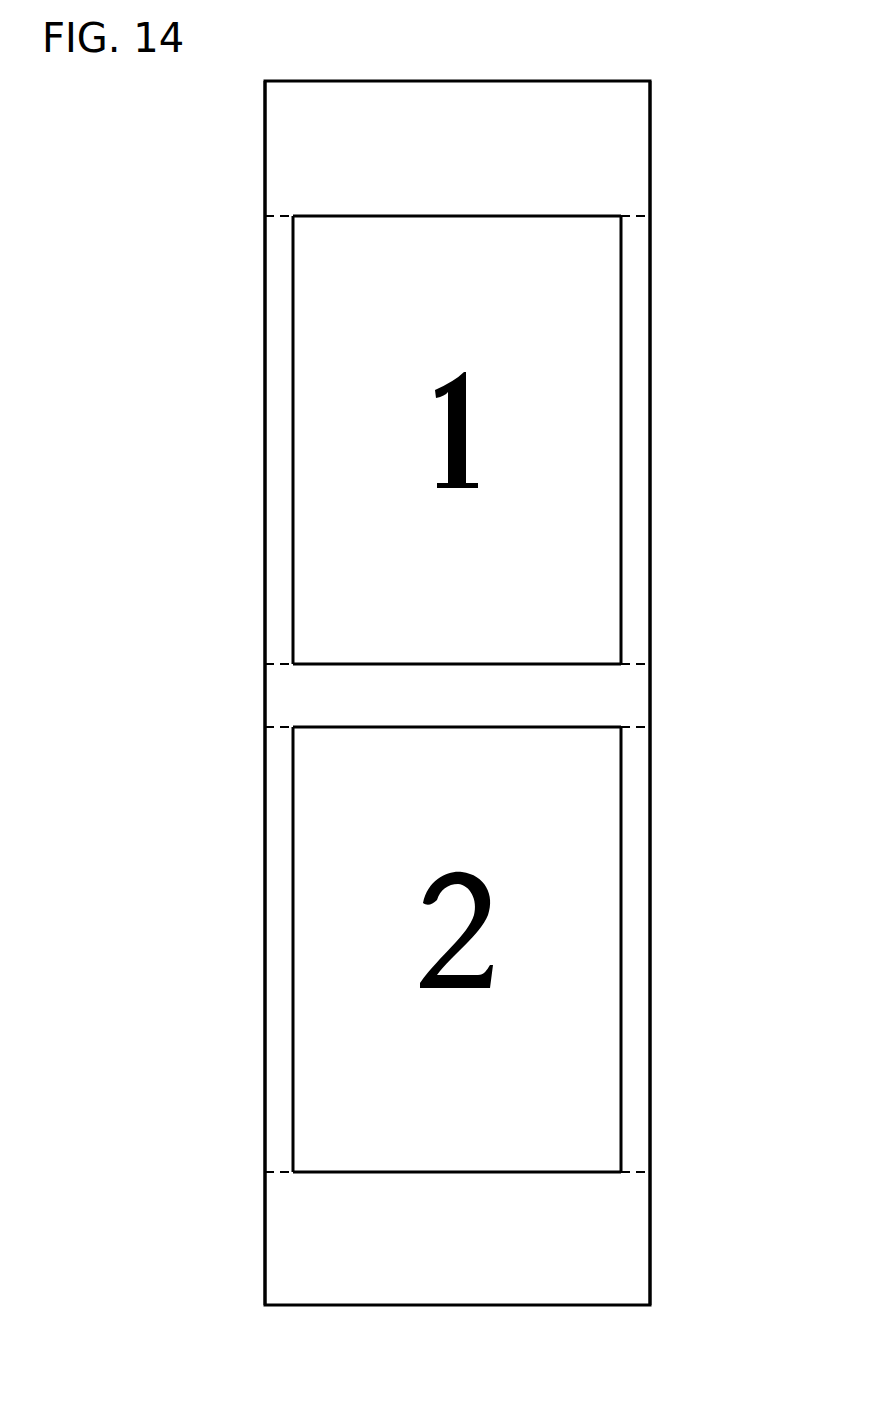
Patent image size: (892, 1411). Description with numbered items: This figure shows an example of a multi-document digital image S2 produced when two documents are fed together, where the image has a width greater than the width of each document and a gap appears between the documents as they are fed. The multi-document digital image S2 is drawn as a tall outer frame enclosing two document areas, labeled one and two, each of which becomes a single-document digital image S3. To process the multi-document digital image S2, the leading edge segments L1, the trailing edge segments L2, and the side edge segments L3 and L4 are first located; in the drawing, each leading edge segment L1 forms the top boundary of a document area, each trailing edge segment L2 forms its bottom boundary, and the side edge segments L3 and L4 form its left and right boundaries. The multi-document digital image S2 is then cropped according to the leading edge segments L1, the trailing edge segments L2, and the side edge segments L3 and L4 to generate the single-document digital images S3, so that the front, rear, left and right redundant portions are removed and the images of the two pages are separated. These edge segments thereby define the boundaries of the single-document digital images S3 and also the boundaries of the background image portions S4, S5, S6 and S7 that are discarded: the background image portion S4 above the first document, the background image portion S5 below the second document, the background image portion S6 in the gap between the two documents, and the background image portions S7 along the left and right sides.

The multi-document digital image S2 is at (453, 24).
The single-document digital image S3 is at (598, 455).
The background image portion S4 is at (613, 165).
The background image portion S5 is at (610, 1250).
The background image portion S6 is at (596, 695).
The background image portion S7 is at (277, 530).
The leading edge segment L1 is at (375, 216).
The trailing edge segment L2 is at (375, 664).
The side edge segment L3 is at (293, 383).
The side edge segment L4 is at (620, 335).